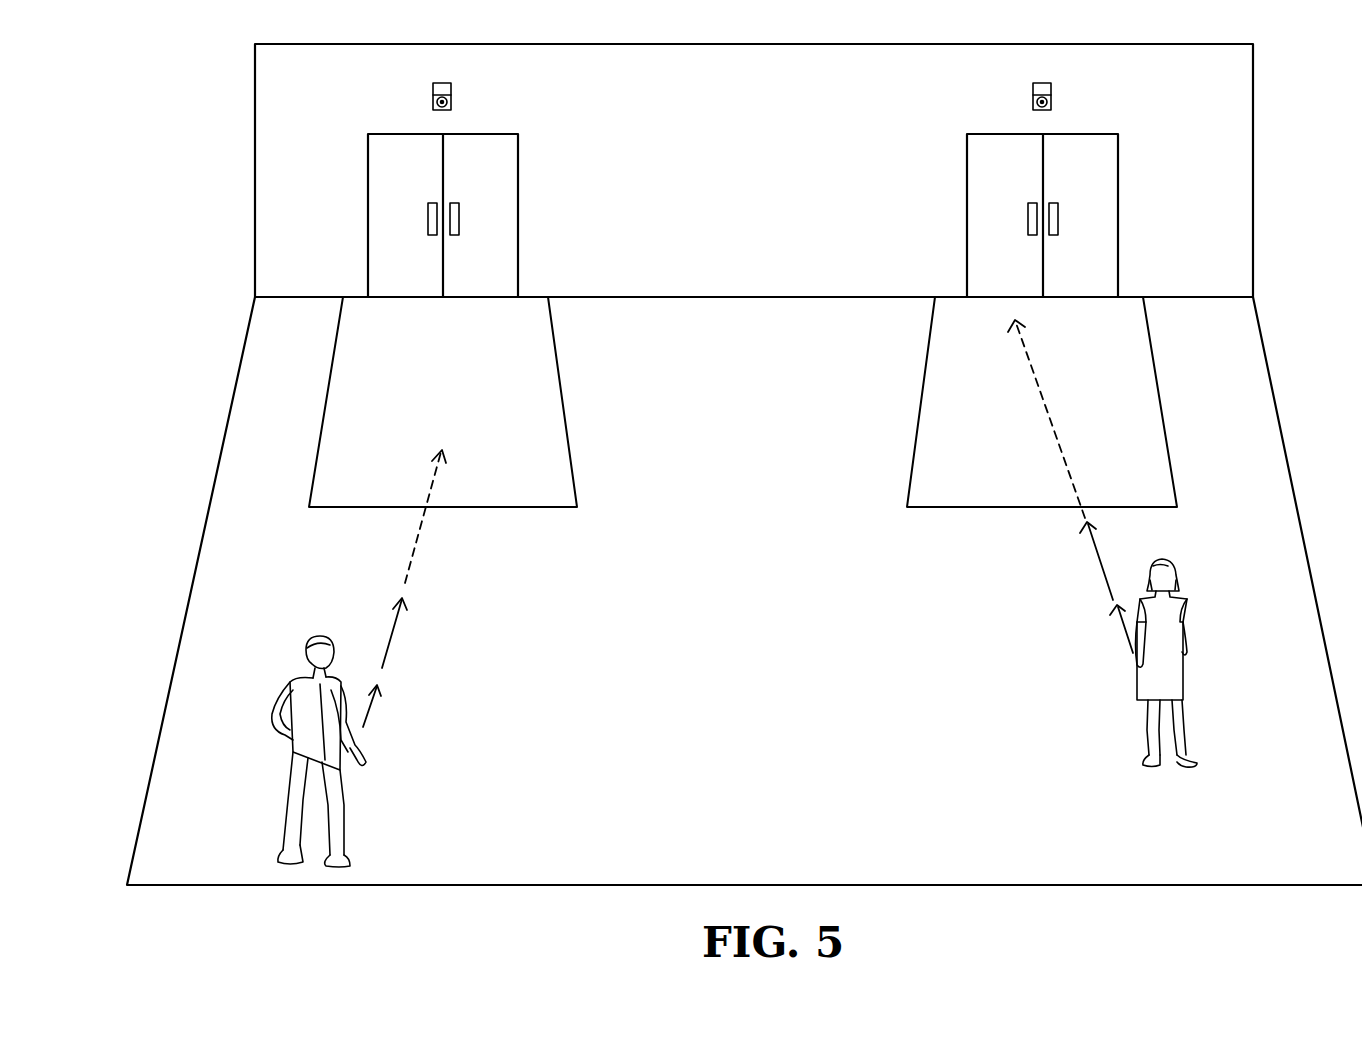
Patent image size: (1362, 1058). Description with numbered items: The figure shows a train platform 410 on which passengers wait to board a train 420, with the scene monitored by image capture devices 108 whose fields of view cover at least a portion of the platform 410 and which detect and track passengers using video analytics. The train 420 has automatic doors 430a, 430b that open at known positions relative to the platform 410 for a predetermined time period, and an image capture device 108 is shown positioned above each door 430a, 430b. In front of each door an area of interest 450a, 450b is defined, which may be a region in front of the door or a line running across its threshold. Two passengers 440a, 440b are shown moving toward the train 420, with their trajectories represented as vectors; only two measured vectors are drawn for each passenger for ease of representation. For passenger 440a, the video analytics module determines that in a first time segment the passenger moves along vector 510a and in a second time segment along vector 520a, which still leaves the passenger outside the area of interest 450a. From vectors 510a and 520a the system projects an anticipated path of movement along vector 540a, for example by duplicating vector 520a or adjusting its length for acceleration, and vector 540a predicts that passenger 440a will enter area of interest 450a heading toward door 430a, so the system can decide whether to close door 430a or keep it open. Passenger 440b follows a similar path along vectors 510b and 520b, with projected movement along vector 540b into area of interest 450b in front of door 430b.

The image capture device 108 is at (444, 83).
The train platform 410 is at (762, 839).
The train 420 is at (762, 90).
The door 430a is at (519, 199).
The door 430b is at (1119, 199).
The passenger 440a is at (330, 826).
The passenger 440b is at (1172, 672).
The area of interest 450a is at (566, 416).
The area of interest 450b is at (1163, 416).
The vector 510a is at (370, 712).
The vector 510b is at (1121, 637).
The vector 520a is at (393, 634).
The vector 520b is at (1098, 569).
The vector 540a is at (421, 532).
The vector 540b is at (1038, 391).